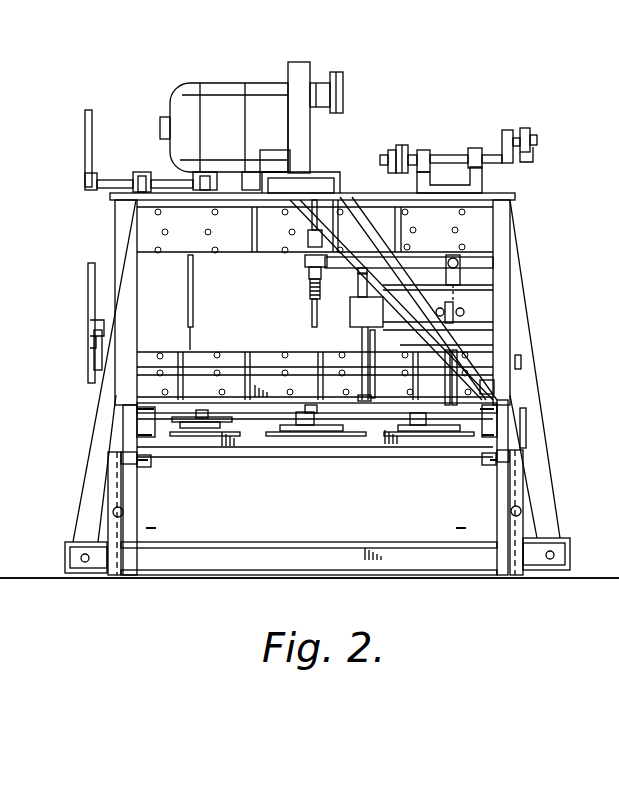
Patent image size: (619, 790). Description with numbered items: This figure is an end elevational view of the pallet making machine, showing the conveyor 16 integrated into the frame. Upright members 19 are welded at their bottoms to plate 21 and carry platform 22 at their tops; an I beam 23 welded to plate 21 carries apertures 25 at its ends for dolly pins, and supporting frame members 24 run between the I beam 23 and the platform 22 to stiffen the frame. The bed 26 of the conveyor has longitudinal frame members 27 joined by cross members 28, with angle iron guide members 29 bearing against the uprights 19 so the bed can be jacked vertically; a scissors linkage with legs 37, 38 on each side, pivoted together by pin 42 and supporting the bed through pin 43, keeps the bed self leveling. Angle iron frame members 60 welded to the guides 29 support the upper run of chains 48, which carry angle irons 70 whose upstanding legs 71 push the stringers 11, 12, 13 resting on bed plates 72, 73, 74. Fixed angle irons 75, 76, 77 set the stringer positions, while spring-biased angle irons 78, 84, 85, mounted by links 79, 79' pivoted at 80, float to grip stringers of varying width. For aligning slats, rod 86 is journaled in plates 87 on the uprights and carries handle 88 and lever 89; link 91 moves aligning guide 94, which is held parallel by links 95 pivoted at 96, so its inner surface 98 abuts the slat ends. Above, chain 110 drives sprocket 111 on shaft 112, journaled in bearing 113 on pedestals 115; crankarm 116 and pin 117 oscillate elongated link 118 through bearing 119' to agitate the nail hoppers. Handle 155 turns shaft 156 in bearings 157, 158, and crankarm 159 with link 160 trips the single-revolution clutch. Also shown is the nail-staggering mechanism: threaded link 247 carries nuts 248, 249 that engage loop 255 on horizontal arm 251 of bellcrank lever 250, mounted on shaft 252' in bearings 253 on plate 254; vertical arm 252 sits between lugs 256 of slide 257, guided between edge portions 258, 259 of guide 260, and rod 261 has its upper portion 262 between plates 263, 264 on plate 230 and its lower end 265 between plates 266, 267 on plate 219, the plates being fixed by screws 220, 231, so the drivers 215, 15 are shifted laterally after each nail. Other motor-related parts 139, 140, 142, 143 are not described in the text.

The stringer 11 is at (210, 452).
The stringer 12 is at (304, 452).
The stringer 13 is at (426, 438).
The drivers 15 is at (42, 197).
The conveyor 16 is at (284, 472).
The upright members 19 is at (124, 230).
The plate 21 is at (354, 580).
The platform 22 is at (380, 194).
The I beam 23 is at (337, 542).
The supporting frame members 24 is at (94, 425).
The apertures 25 is at (81, 557).
The bed 26 is at (374, 452).
The longitudinal frame members 27 is at (154, 456).
The cross members 28 is at (270, 458).
The guide members 29 is at (122, 442).
The leg 37 is at (113, 500).
The leg 38 is at (134, 492).
The pin 42 is at (138, 512).
The supporting pin 43 is at (138, 467).
The chains 48 is at (142, 406).
The frame members 60 is at (144, 419).
The angle irons 70 is at (232, 420).
The upstanding legs 71 is at (224, 404).
The bed plate 72 is at (206, 452).
The bed plate 73 is at (326, 438).
The bed plate 74 is at (416, 438).
The angle iron 75 is at (174, 436).
The angle iron 76 is at (450, 436).
The angle iron 77 is at (348, 436).
The angle iron 78 is at (202, 404).
The link 79 is at (240, 487).
The links 79' is at (376, 455).
The pivot 80 is at (240, 454).
The movable angle iron 84 is at (406, 417).
The movable angle iron 85 is at (305, 404).
The rod 86 is at (258, 359).
The plates 87 is at (114, 382).
The handle 88 is at (88, 285).
The lever 89 is at (478, 359).
The link 91 is at (440, 378).
The aligning guide 94 is at (452, 400).
The links 95 is at (494, 393).
The pivot 96 is at (502, 441).
The inner surface 98 is at (428, 390).
The chain 110 is at (394, 149).
The sprocket 111 is at (414, 155).
The shaft 112 is at (466, 154).
The bearing 113 is at (424, 150).
The pedestals 115 is at (474, 177).
The crankarm 116 is at (506, 130).
The pin 117 is at (536, 134).
The elongated link 118 is at (534, 158).
The bearing 119' is at (529, 120).
The motor 139 is at (230, 83).
The motor base 140 is at (330, 179).
The motor shaft 142 is at (344, 92).
The pulley 143 is at (339, 77).
The handle 155 is at (84, 116).
The shaft 156 is at (126, 178).
The bearing 157 is at (142, 171).
The bearing 158 is at (248, 172).
The crankarm 159 is at (210, 172).
The link 160 is at (232, 204).
The drivers 215 is at (188, 293).
The plate 219 is at (230, 352).
The screws 220 is at (208, 354).
The plate 230 is at (216, 252).
The screws 231 is at (160, 214).
The link 247 is at (310, 220).
The lower movable nut 248 is at (308, 276).
The upper movable nut 249 is at (306, 236).
The bellcrank lever 250 is at (308, 288).
The horizontal arm 251 is at (409, 259).
The vertical arm 252 is at (511, 316).
The shaft 252' is at (440, 245).
The bearings 253 is at (476, 260).
The plate 254 is at (488, 270).
The loop 255 is at (304, 260).
The lugs 256 is at (466, 310).
The slide 257 is at (352, 311).
The edge portion 258 is at (414, 300).
The edge portion 259 is at (400, 328).
The guide 260 is at (360, 270).
The rod 261 is at (360, 292).
The upper portion 262 is at (408, 212).
The plate 263 is at (436, 227).
The plate 264 is at (301, 182).
The lower end 265 is at (362, 341).
The plate 266 is at (379, 362).
The plate 267 is at (336, 365).